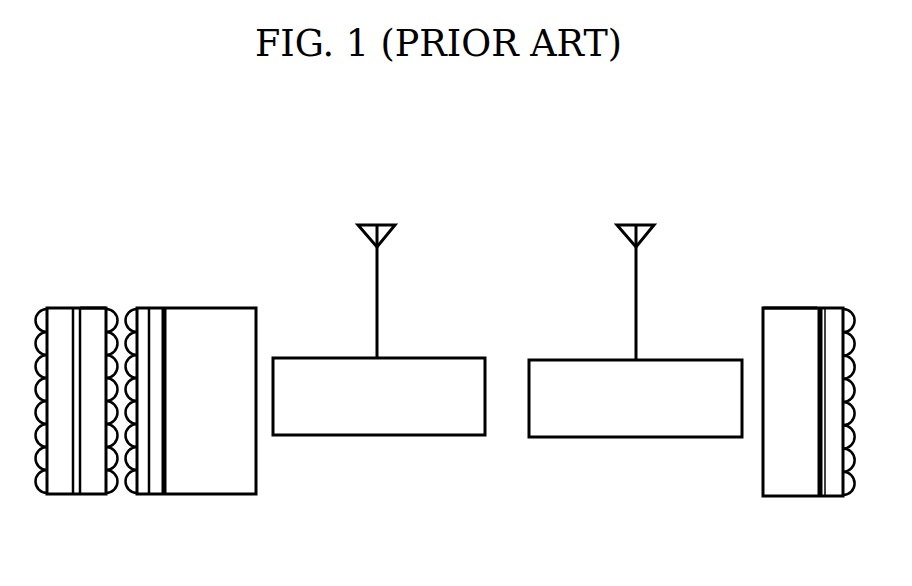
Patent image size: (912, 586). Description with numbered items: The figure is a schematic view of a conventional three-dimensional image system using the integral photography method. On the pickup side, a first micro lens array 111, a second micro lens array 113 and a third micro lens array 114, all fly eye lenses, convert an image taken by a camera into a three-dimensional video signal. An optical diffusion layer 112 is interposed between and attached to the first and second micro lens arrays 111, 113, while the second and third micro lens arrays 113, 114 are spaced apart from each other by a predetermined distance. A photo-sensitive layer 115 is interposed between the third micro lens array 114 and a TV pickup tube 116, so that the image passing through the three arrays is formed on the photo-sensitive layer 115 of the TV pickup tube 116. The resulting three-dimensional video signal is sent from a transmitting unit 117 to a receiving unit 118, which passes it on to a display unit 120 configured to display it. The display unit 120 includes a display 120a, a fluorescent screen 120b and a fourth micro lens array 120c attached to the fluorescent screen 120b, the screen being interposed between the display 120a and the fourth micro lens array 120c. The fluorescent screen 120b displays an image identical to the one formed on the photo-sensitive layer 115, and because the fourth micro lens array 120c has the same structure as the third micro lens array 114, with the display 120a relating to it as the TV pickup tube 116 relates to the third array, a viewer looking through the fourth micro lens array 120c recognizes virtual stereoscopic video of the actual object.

The first micro lens array 111 is at (62, 307).
The optical diffusion layer 112 is at (80, 307).
The second micro lens array 113 is at (100, 307).
The third micro lens array 114 is at (150, 496).
The photo-sensitive layer 115 is at (163, 496).
The TV pickup tube 116 is at (233, 496).
The transmitting unit 117 is at (381, 437).
The receiving unit 118 is at (639, 438).
The display unit 120 is at (765, 420).
The display 120a is at (781, 318).
The fluorescent screen 120b is at (823, 317).
The fourth micro lens array 120c is at (831, 431).